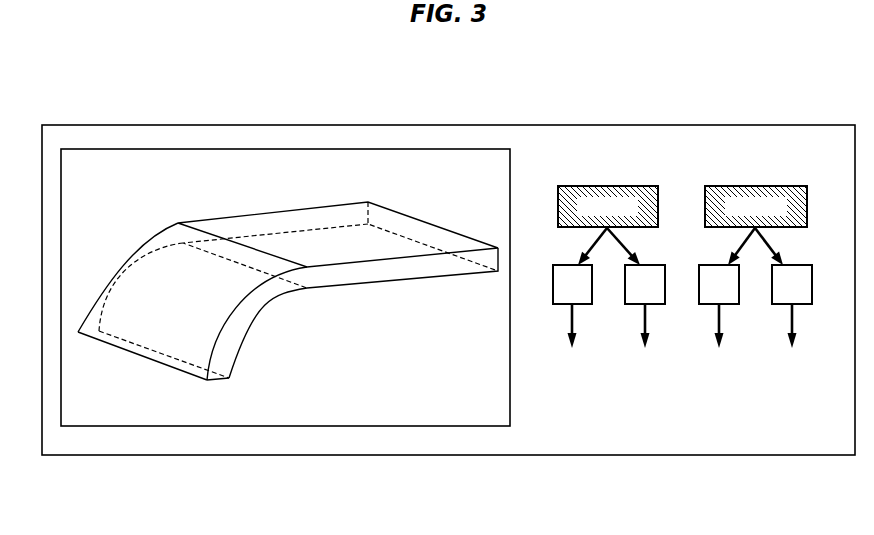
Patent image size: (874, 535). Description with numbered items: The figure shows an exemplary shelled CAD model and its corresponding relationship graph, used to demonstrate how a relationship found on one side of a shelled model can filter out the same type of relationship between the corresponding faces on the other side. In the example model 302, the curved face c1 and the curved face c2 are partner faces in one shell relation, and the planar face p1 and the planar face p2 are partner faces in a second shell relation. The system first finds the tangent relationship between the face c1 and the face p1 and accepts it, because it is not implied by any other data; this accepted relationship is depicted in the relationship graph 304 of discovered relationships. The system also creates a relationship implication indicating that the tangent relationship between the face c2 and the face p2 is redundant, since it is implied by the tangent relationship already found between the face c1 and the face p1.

The example model 302 is at (344, 183).
The discovered relationships 304 is at (734, 151).
The face c1 is at (139, 240).
The face c2 is at (256, 327).
The face p1 is at (318, 235).
The face p2 is at (375, 289).